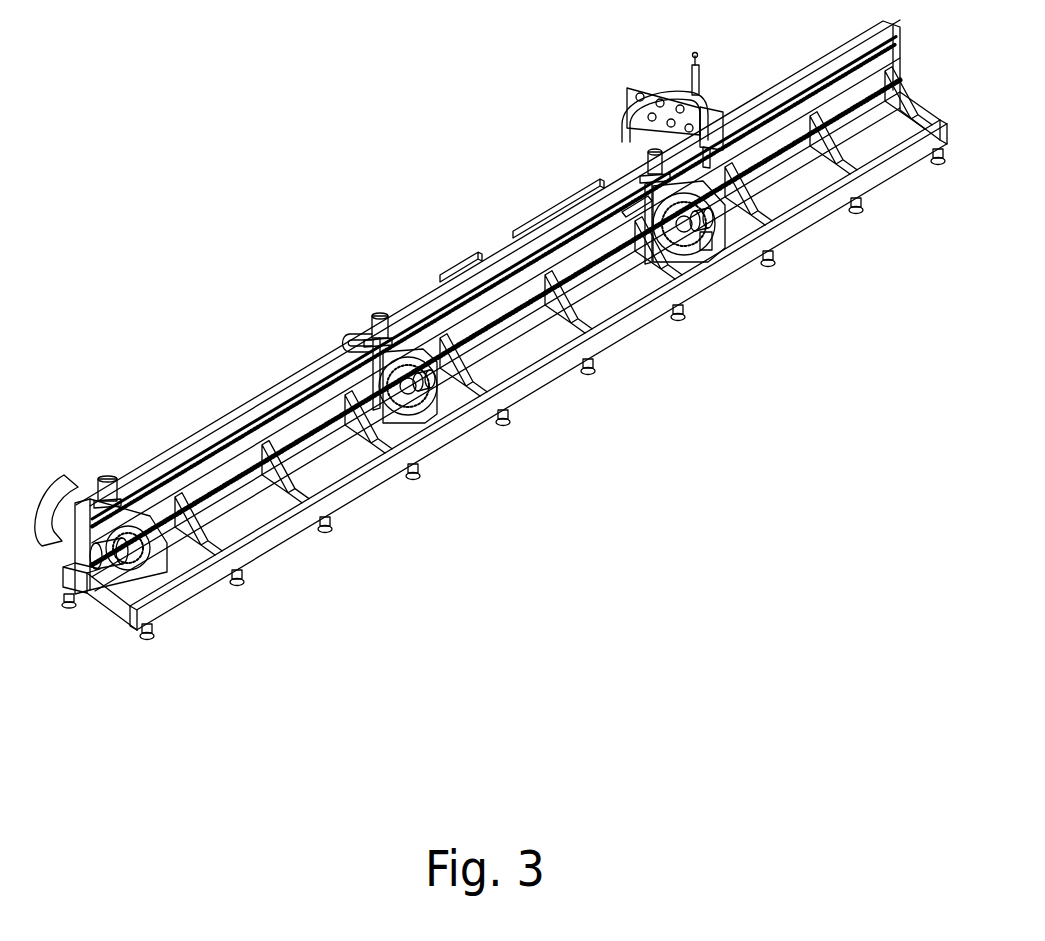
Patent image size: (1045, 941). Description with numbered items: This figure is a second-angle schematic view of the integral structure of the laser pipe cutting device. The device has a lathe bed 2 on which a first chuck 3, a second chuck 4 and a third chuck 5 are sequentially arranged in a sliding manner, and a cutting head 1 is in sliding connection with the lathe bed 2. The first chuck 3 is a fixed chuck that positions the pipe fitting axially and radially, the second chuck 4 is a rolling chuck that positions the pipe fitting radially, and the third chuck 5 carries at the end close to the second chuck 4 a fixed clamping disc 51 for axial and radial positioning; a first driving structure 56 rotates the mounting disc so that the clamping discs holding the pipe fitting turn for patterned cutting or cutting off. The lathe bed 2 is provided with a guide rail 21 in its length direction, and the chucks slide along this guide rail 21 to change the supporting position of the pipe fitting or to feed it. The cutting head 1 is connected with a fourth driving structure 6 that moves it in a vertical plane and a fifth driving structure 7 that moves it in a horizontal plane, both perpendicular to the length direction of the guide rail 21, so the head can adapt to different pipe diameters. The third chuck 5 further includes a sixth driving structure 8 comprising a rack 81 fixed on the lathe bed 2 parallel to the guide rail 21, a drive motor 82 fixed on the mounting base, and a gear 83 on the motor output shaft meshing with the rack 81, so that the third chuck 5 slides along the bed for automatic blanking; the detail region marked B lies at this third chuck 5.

The cutting head 1 is at (710, 183).
The lathe bed 2 is at (335, 362).
The guide rail 21 is at (635, 268).
The first chuck 3 is at (140, 568).
The second chuck 4 is at (437, 365).
The third chuck 5 is at (739, 305).
The fixed clamping disc 51 is at (683, 258).
The first driving structure 56 is at (697, 252).
The region B is at (710, 247).
The fourth driving structure 6 is at (705, 90).
The fifth driving structure 7 is at (622, 97).
The sixth driving structure 8 is at (560, 125).
The rack 81 is at (632, 208).
The drive motor 82 is at (625, 122).
The gear 83 is at (655, 160).